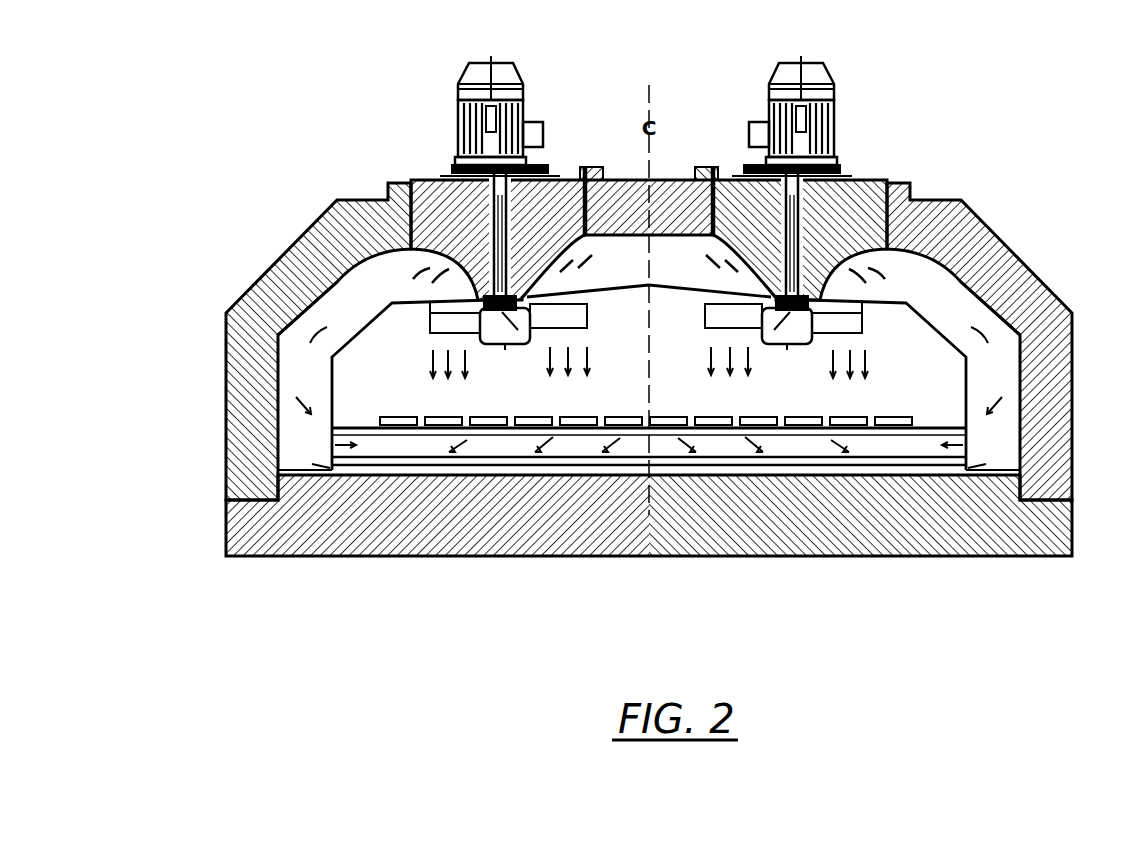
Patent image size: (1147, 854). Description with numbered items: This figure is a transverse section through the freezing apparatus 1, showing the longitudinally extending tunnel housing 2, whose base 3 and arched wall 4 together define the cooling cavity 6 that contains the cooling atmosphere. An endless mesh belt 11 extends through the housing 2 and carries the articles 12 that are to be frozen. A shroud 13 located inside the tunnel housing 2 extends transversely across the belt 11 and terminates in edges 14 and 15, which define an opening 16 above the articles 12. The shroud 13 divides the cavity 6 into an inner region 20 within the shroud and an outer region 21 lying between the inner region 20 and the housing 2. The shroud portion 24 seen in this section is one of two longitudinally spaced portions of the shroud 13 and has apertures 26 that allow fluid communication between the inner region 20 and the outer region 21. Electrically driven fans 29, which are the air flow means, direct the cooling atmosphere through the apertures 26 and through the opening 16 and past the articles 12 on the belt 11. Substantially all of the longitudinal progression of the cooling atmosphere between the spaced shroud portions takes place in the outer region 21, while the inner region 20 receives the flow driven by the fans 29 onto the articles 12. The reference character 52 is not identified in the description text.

The freezing apparatus 1 is at (636, 314).
The tunnel housing 2 is at (958, 200).
The base 3 is at (434, 532).
The arched wall 4 is at (263, 297).
The cooling cavity 6 is at (345, 298).
The endless mesh belt 11 is at (487, 460).
The articles 12 is at (397, 420).
The shroud 13 is at (995, 266).
The edge 14 is at (340, 427).
The edge 15 is at (1020, 424).
The opening 16 is at (708, 440).
The inner region 20 is at (636, 351).
The outer region 21 is at (660, 274).
The first shroud portion 24 is at (332, 380).
The aperture 26 is at (395, 303).
The electrically driven fan 29 is at (505, 68).
The gas flow direction 52 is at (685, 46).